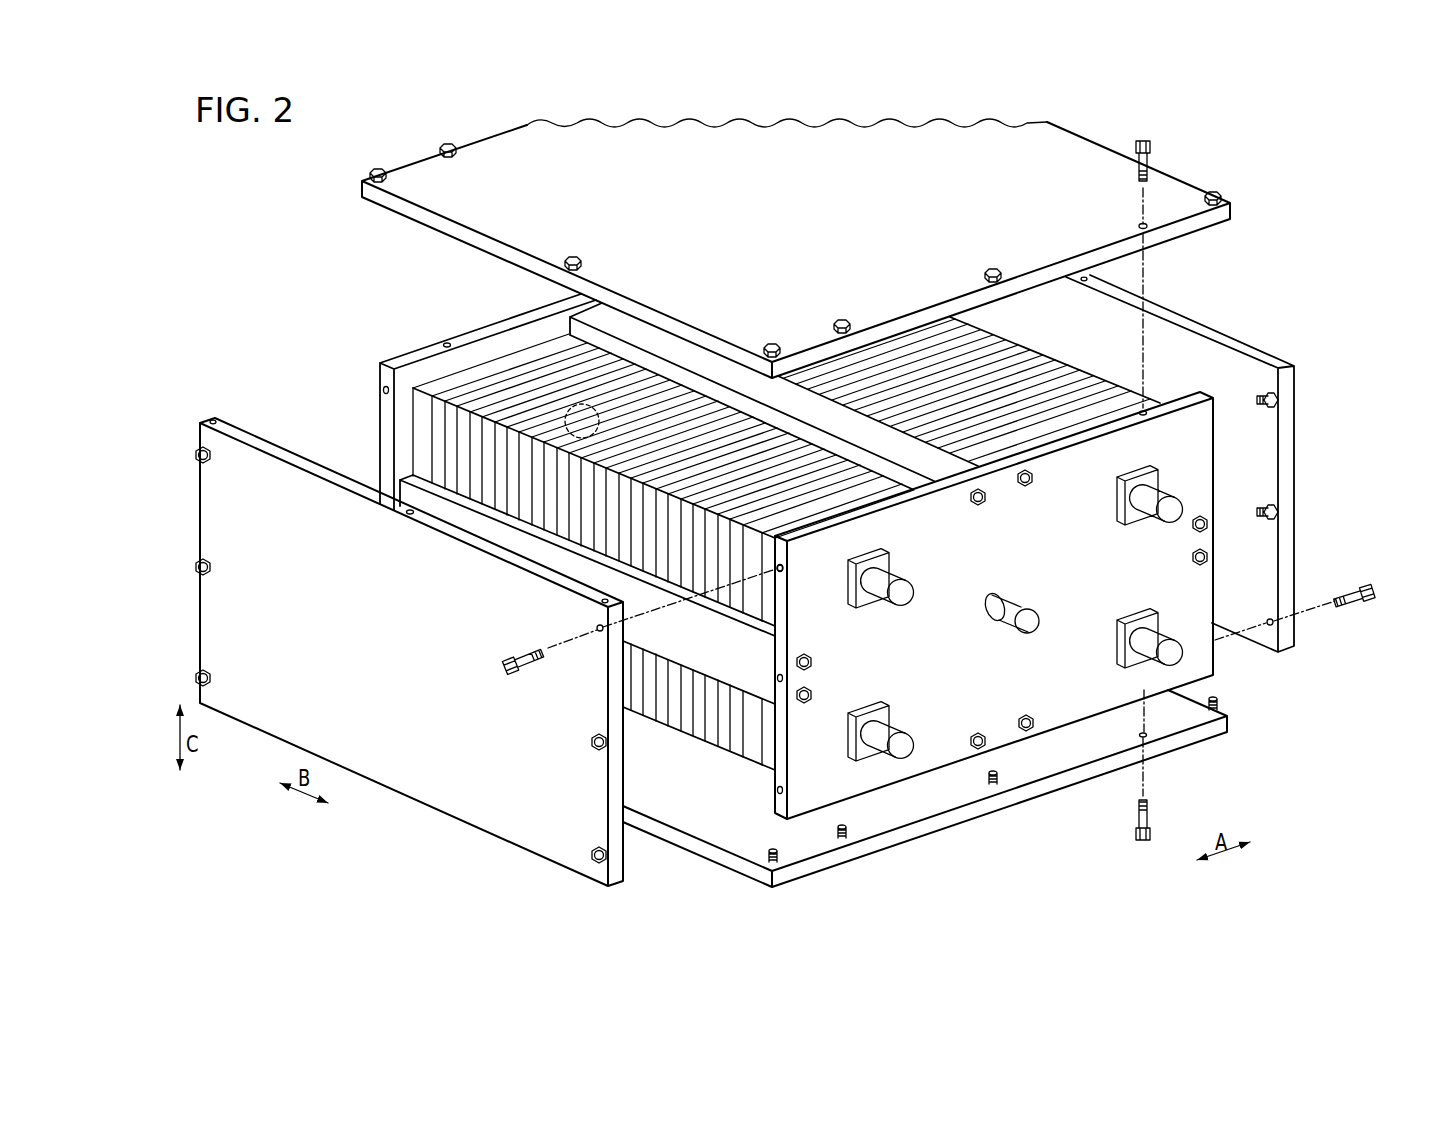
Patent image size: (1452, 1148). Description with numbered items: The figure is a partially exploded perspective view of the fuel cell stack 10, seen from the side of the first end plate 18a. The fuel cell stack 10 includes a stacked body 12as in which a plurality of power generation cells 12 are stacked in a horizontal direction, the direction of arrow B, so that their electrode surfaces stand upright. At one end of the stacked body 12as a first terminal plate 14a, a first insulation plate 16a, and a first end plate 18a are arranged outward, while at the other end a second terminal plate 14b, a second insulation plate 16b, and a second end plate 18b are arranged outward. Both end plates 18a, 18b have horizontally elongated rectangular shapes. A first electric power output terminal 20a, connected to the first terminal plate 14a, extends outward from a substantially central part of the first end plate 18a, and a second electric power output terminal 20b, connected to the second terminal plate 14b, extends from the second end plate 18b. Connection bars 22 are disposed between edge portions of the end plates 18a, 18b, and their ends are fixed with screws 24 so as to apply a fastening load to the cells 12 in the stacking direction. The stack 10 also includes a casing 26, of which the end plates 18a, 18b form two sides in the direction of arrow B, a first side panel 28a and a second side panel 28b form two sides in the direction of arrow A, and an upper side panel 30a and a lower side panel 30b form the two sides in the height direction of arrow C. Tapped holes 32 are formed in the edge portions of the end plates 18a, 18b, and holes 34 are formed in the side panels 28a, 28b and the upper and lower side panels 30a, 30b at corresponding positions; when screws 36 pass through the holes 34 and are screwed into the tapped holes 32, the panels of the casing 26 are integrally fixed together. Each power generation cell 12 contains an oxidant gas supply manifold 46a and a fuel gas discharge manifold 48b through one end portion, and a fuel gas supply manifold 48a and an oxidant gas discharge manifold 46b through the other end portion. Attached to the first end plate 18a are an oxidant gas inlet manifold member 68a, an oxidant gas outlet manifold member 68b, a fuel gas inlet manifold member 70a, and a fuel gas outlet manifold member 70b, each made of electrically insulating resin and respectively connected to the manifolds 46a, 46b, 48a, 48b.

The fuel cell stack 10 is at (298, 195).
The power generation cell 12 is at (541, 510).
The stacked body 12as is at (786, 543).
The first terminal plate 14a is at (750, 764).
The second terminal plate 14b is at (428, 385).
The first insulation plate 16a is at (767, 781).
The second insulation plate 16b is at (448, 395).
The first end plate 18a is at (1217, 418).
The second end plate 18b is at (376, 380).
The first electric power output terminal 20a is at (1038, 628).
The second electric power output terminal 20b is at (592, 442).
The connection bar 22 is at (570, 322).
The screw 24 is at (979, 507).
The casing 26 is at (781, 246).
The first side panel 28a is at (525, 846).
The second side panel 28b is at (1256, 345).
The upper side panel 30a is at (1112, 157).
The lower side panel 30b is at (1232, 722).
The tapped hole 32 is at (785, 572).
The hole 34 is at (1150, 229).
The screw 36 is at (1154, 144).
The oxidant gas supply manifold 46a is at (1180, 507).
The oxidant gas discharge manifold 46b is at (902, 752).
The fuel gas supply manifold 48a is at (905, 604).
The fuel gas discharge manifold 48b is at (1166, 655).
The oxidant gas inlet manifold member 68a is at (1258, 490).
The oxidant gas outlet manifold member 68b is at (890, 797).
The fuel gas inlet manifold member 70a is at (951, 720).
The fuel gas outlet manifold member 70b is at (1181, 707).